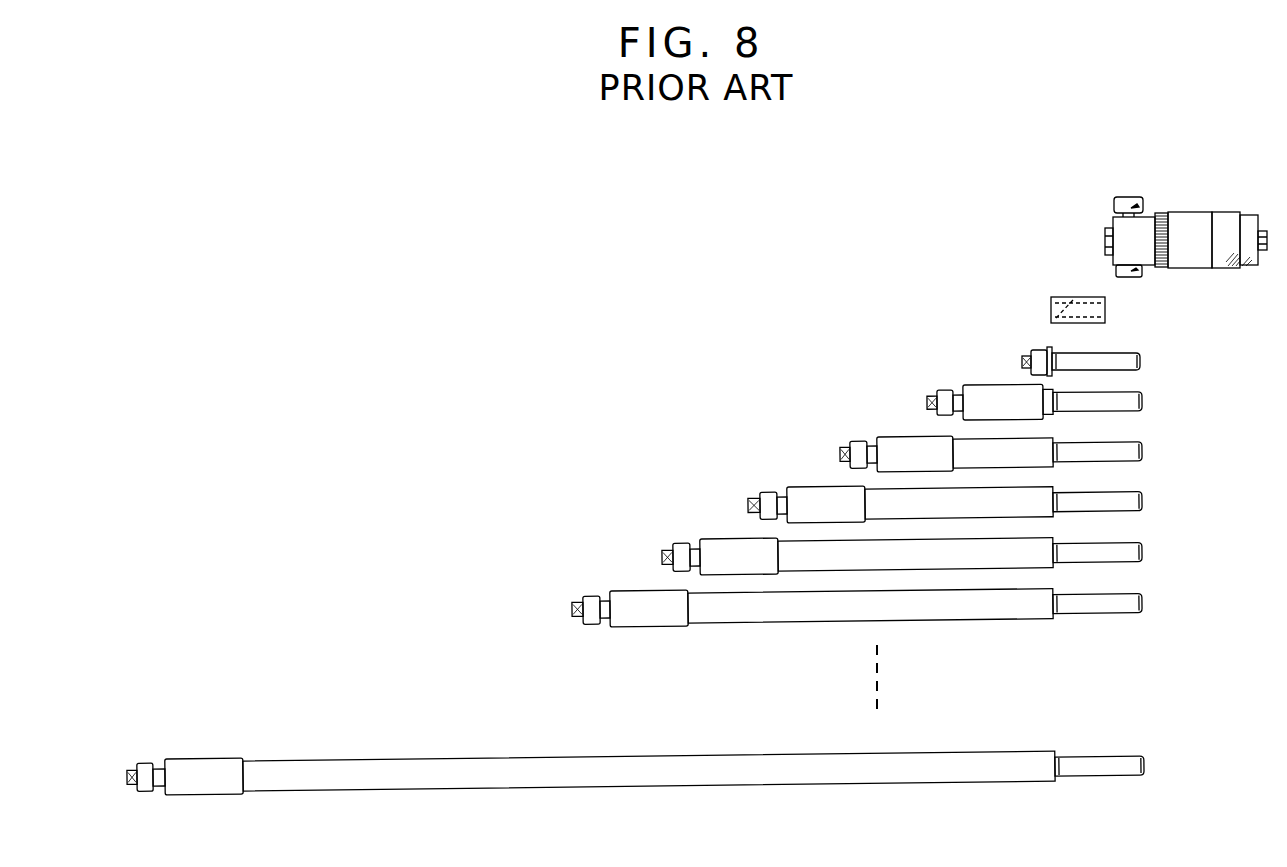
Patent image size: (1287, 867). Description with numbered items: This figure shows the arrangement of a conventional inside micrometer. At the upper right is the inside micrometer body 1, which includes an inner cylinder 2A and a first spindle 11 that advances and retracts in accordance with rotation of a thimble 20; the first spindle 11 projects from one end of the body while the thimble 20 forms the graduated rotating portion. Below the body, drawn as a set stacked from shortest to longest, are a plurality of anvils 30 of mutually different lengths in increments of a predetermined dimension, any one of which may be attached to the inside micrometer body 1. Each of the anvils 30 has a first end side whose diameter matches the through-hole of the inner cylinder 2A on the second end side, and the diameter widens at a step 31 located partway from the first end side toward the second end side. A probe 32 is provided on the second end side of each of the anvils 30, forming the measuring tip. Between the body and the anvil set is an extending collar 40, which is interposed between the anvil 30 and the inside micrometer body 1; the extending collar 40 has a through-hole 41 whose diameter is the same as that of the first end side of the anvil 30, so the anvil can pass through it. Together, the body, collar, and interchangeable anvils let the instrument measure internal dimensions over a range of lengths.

The inside micrometer body 1 is at (1196, 186).
The inner cylinder 2A is at (1128, 236).
The first spindle 11 is at (1263, 222).
The thimble 20 is at (1193, 262).
The anvils 30 is at (1180, 346).
The step 31 is at (1058, 352).
The probe 32 is at (1020, 362).
The extending collar 40 is at (1060, 270).
The through-hole 41 is at (1052, 308).